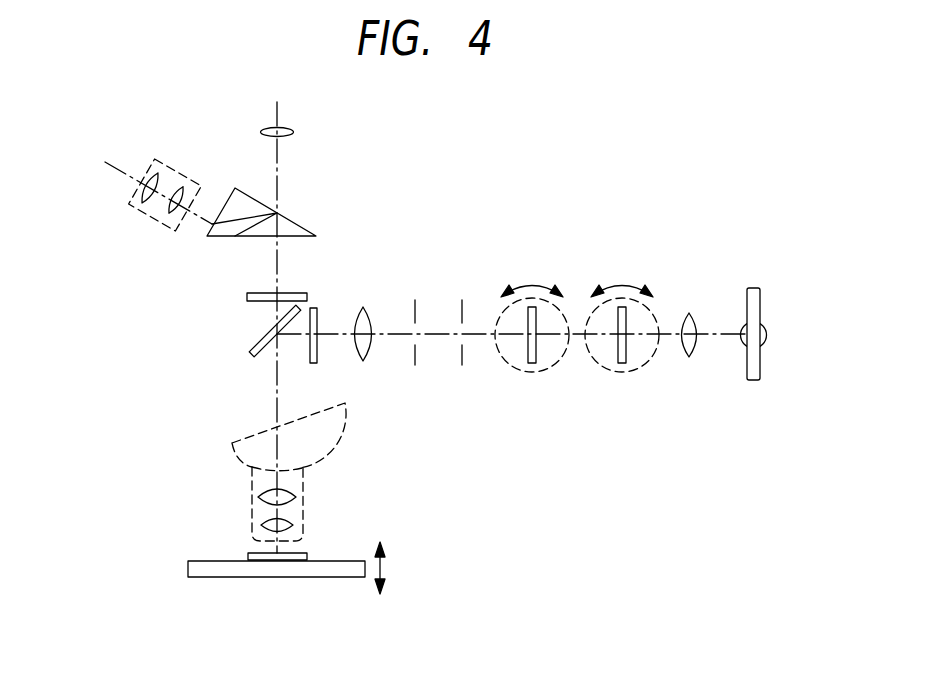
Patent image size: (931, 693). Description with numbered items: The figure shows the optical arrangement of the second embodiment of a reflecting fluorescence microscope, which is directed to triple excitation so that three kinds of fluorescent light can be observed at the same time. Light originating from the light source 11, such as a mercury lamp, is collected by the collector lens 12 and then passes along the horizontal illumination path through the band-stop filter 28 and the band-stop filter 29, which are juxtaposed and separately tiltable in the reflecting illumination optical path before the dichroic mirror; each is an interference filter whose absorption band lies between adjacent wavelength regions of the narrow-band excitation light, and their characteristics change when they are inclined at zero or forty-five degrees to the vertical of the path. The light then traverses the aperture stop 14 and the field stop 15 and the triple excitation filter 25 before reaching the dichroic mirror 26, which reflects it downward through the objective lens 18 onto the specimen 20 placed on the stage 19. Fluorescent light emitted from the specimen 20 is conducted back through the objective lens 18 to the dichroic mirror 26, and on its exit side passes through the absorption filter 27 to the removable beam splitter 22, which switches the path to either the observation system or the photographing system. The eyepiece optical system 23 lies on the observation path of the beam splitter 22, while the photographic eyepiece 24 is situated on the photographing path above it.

The light source 11 is at (753, 381).
The collector lens 12 is at (694, 352).
The aperture stop 14 is at (462, 365).
The field stop 15 is at (415, 365).
The objective lens 18 is at (250, 500).
The stage 19 is at (353, 560).
The specimen 20 is at (303, 553).
The beam splitter 22 is at (297, 218).
The eyepiece optical system 23 is at (158, 213).
The photographic eyepiece 24 is at (293, 130).
The triple excitation filter 25 is at (317, 352).
The dichroic mirror 26 is at (254, 349).
The absorption filter 27 is at (301, 292).
The band-stop filter 28 is at (610, 373).
The band-stop filter 29 is at (520, 373).